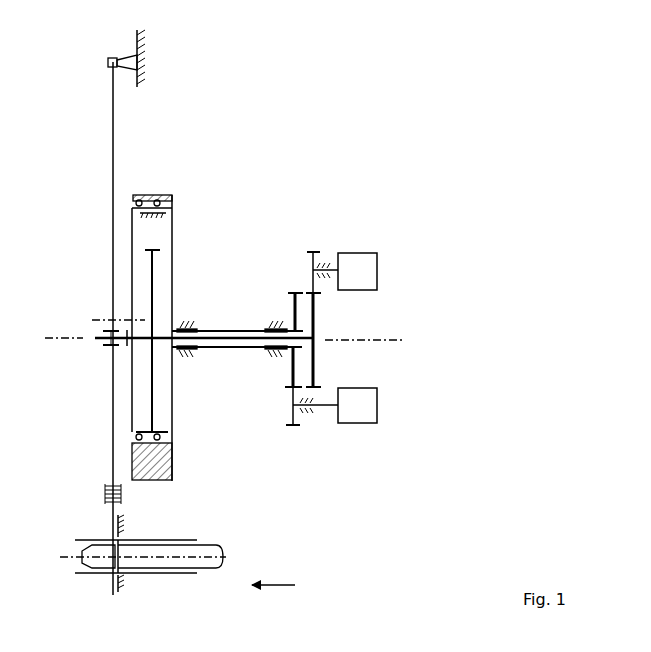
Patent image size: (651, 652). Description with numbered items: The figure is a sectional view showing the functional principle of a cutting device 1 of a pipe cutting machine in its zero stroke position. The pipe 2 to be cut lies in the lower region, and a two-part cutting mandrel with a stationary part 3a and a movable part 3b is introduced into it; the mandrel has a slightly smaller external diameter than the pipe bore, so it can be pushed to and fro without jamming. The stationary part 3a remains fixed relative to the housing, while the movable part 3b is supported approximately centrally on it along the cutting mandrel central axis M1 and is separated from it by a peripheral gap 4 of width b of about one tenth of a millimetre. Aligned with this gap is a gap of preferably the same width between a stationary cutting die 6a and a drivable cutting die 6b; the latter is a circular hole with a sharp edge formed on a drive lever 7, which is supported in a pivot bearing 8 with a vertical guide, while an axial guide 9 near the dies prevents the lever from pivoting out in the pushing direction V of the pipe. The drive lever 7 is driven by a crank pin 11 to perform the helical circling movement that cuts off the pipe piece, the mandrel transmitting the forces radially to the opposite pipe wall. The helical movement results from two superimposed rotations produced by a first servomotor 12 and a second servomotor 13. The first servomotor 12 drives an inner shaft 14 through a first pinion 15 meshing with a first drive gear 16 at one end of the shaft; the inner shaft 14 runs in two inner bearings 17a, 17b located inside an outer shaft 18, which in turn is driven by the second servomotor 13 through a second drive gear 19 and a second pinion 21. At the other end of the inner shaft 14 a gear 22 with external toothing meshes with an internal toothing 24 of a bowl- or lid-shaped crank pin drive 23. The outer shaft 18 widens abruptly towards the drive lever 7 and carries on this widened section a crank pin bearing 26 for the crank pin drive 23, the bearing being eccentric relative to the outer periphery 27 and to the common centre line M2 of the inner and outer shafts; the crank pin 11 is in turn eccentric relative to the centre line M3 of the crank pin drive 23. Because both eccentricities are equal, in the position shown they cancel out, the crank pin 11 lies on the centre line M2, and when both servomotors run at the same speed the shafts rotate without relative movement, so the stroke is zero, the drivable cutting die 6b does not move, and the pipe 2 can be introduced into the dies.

The cutting device 1 is at (436, 88).
The pipe 2 is at (178, 575).
The stationary part 3a is at (183, 548).
The movable part 3b is at (97, 566).
The gap 4 is at (120, 562).
The stationary cutting die 6a is at (122, 528).
The drivable cutting die 6b is at (108, 528).
The drive lever 7 is at (113, 128).
The pivot bearing 8 is at (122, 56).
The axial guide 9 is at (105, 491).
The crank pin 11 is at (98, 339).
The first servomotor 12 is at (364, 266).
The second servomotor 13 is at (365, 405).
The inner shaft 14 is at (218, 342).
The first pinion 15 is at (318, 258).
The first drive gear 16 is at (318, 316).
The inner bearing 17a is at (190, 326).
The inner bearing 17b is at (276, 326).
The outer shaft 18 is at (250, 350).
The second drive gear 19 is at (298, 372).
The second pinion 21 is at (293, 418).
The gear 22 is at (154, 276).
The crank pin drive 23 is at (132, 222).
The internal toothing 24 is at (173, 214).
The crank pin bearing 26 is at (160, 198).
The outer periphery 27 is at (150, 195).
The gap width b is at (120, 543).
The cutting mandrel central axis M1 is at (225, 556).
The centre line M2 is at (393, 340).
The centre line M3 is at (98, 318).
The pushing direction V is at (273, 600).